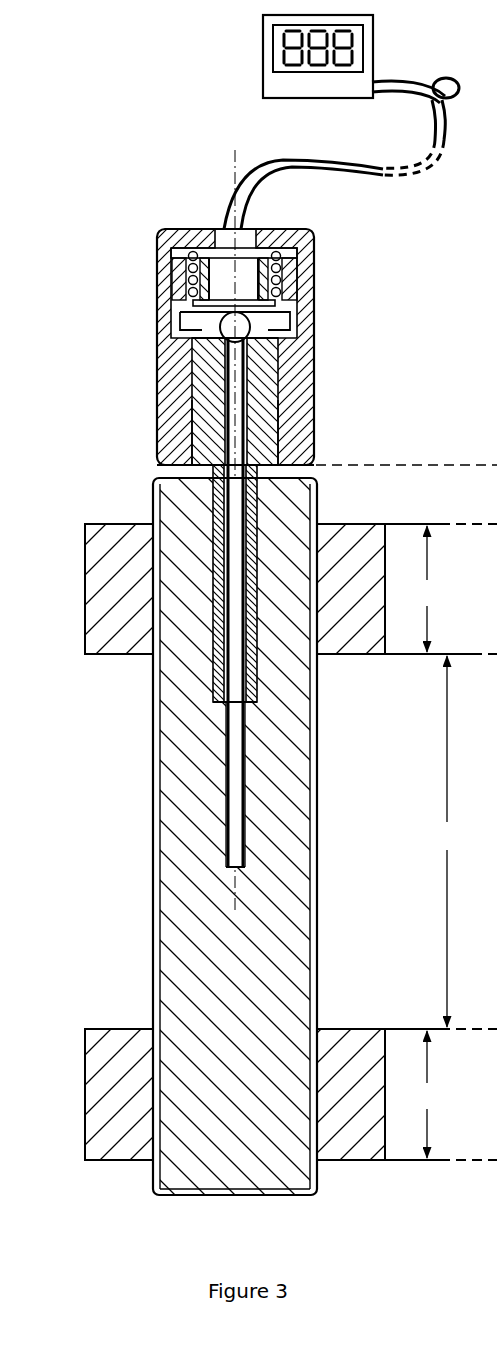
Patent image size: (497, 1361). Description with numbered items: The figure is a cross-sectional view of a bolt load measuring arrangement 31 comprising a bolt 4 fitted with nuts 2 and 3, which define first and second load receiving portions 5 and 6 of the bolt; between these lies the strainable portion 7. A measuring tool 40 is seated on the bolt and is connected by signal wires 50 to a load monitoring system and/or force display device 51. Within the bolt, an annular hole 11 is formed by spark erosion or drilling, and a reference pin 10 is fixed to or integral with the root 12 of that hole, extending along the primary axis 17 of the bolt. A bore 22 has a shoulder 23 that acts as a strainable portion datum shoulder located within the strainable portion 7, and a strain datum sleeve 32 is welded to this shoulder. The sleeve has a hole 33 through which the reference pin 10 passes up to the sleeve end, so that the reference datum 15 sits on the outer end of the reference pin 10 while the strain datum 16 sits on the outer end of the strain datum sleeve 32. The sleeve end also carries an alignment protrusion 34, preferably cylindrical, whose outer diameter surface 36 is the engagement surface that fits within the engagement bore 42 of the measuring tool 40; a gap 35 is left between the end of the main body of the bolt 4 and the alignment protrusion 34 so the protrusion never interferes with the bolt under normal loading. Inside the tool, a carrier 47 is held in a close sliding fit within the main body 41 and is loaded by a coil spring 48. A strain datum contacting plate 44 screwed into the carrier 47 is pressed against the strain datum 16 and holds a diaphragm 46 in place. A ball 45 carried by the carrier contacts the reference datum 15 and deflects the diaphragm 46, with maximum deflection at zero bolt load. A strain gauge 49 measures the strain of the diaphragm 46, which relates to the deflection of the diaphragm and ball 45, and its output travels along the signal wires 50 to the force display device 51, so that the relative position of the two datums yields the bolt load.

The nut 2 is at (112, 647).
The nut 3 is at (105, 1035).
The bolt 4 is at (177, 1183).
The first load receiving portion 5 is at (441, 589).
The second load receiving portion 6 is at (441, 1094).
The strainable portion 7 is at (447, 841).
The reference pin 10 is at (232, 771).
The hole 11 is at (226, 822).
The root 12 is at (227, 867).
The reference datum 15 is at (262, 366).
The strain datum 16 is at (205, 362).
The primary axis 17 is at (237, 882).
The bore 22 is at (260, 663).
The strainable portion datum shoulder 23 is at (254, 704).
The bolt load measuring arrangement 31 is at (103, 83).
The strain datum sleeve 32 is at (250, 503).
The hole 33 is at (190, 442).
The alignment protrusion 34 is at (300, 455).
The gap 35 is at (155, 470).
The outer diameter surface 36 is at (280, 424).
The measuring tool 40 is at (370, 243).
The main body 41 is at (313, 305).
The engagement bore 42 is at (175, 399).
The strain datum contacting plate 44 is at (196, 335).
The ball 45 is at (252, 338).
The diaphragm 46 is at (178, 312).
The carrier 47 is at (285, 279).
The coil spring 48 is at (282, 238).
The strain gauge 49 is at (185, 290).
The signal wires 50 is at (330, 157).
The force display device 51 is at (267, 83).